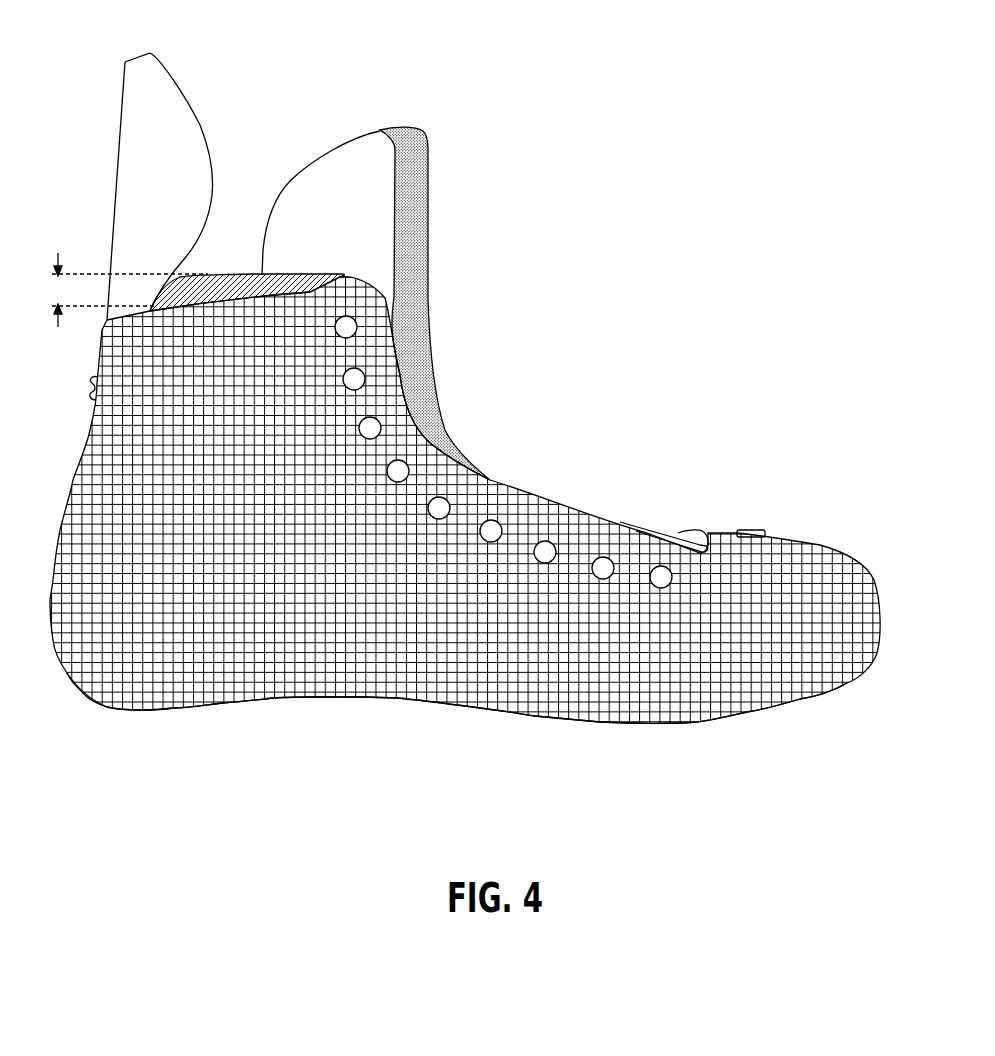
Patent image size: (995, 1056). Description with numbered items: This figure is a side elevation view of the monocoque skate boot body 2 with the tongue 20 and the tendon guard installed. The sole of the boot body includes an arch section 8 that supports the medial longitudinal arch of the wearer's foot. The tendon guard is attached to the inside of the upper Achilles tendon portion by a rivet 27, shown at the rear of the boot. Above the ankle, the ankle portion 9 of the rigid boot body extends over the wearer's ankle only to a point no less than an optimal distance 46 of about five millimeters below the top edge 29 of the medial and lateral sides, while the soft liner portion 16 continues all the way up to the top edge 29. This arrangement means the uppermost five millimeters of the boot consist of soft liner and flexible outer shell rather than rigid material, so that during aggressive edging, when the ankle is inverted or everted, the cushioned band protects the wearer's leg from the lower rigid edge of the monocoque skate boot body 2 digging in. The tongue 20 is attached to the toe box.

The monocoque skate boot body 2 is at (843, 540).
The arch section 8 is at (397, 700).
The ankle portion 9 is at (250, 418).
The liner portion 16 is at (252, 273).
The tongue 20 is at (340, 213).
The rivet 27 is at (95, 392).
The top edge 29 is at (215, 275).
The optimal distance 46 is at (128, 290).